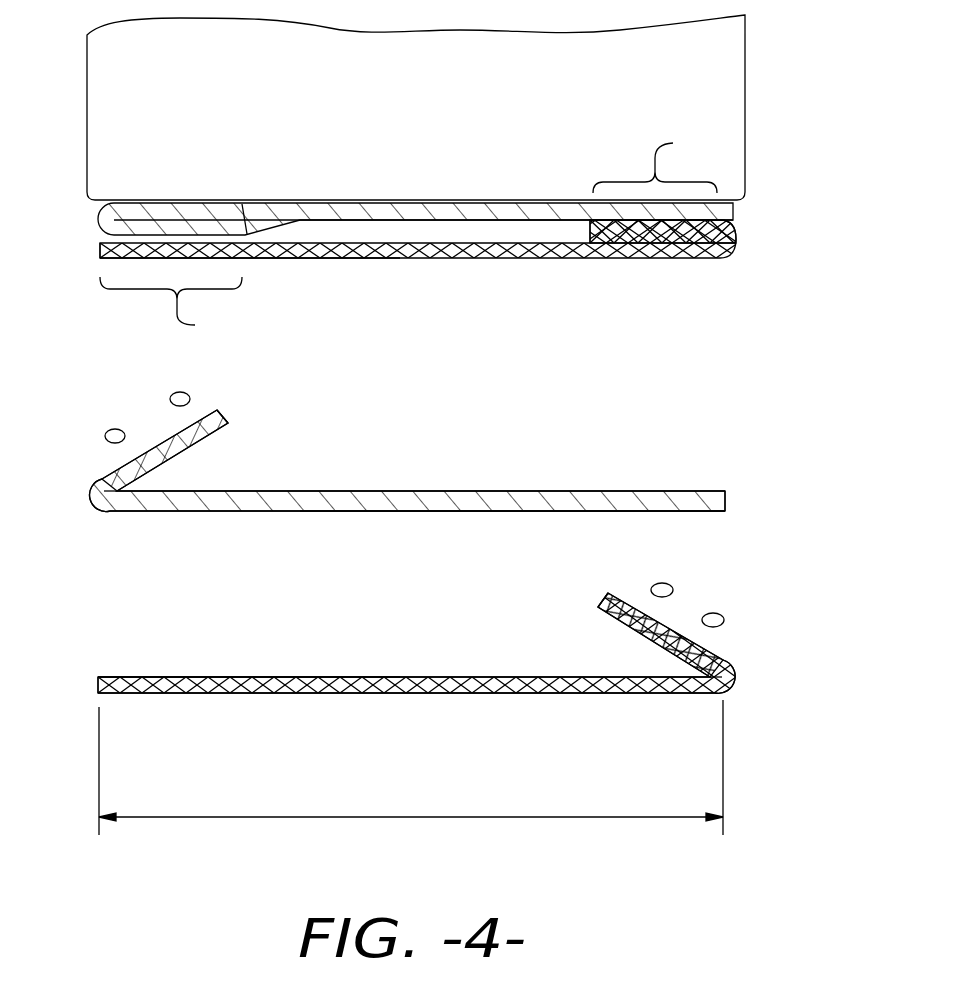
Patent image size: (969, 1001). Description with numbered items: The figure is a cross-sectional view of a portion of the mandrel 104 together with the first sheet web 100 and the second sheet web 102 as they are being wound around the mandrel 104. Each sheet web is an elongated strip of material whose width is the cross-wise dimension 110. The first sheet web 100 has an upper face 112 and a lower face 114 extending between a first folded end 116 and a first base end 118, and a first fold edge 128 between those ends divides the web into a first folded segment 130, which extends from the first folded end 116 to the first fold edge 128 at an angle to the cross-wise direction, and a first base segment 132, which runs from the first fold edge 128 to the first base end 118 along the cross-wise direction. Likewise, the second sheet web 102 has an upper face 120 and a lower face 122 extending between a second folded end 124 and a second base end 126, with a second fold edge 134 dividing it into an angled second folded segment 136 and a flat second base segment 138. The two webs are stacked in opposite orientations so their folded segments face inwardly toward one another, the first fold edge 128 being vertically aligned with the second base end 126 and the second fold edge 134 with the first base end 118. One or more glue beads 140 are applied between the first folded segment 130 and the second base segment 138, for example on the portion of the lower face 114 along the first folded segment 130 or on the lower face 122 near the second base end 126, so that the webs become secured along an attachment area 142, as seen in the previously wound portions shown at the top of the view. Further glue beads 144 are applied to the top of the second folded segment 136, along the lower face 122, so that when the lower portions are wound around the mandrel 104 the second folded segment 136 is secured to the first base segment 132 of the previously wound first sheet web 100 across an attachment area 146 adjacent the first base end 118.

The first sheet web 100 is at (502, 262).
The second sheet web 102 is at (353, 204).
The mandrel 104 is at (441, 110).
The cross-wise dimension 110 is at (435, 818).
The upper face 112 is at (400, 676).
The lower face 114 is at (243, 694).
The first folded end 116 is at (598, 604).
The first base end 118 is at (97, 257).
The upper face 120 is at (360, 491).
The lower face 122 is at (287, 511).
The second folded end 124 is at (226, 412).
The second base end 126 is at (727, 500).
The first fold edge 128 is at (723, 683).
The first folded segment 130 is at (660, 228).
The first base segment 132 is at (305, 258).
The second fold edge 134 is at (97, 494).
The second folded segment 136 is at (185, 448).
The second base segment 138 is at (478, 213).
The glue beads 140 is at (662, 583).
The attachment area 142 is at (660, 161).
The glue beads 144 is at (108, 430).
The attachment area 146 is at (177, 310).